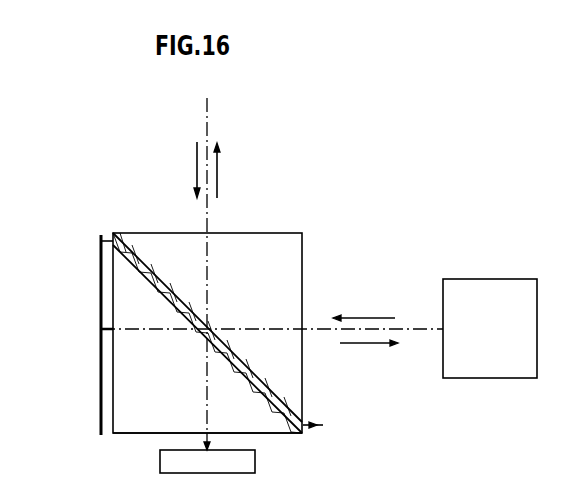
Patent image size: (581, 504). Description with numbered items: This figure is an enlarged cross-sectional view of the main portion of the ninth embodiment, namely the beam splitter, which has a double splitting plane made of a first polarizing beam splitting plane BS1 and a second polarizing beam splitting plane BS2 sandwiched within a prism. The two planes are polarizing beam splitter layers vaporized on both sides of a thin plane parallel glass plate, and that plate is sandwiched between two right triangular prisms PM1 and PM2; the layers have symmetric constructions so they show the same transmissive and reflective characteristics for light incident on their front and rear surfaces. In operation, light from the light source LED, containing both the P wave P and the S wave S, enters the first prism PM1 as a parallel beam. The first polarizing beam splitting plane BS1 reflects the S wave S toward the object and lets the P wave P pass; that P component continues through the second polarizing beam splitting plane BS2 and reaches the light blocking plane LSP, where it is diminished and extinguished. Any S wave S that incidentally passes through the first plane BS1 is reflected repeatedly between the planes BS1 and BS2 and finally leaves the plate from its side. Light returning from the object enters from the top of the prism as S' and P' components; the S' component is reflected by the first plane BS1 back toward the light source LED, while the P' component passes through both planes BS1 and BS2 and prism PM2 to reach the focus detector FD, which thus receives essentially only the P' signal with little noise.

The right triangular prism PM1 is at (283, 241).
The right triangular prism PM2 is at (128, 422).
The first polarizing beam splitting plane BS1 is at (269, 390).
The second polarizing beam splitting plane BS2 is at (238, 378).
The light blocking plane LSP is at (100, 275).
The light source LED is at (481, 285).
The focus detector FD is at (253, 472).
The S wave S is at (193, 170).
The P wave P is at (259, 341).